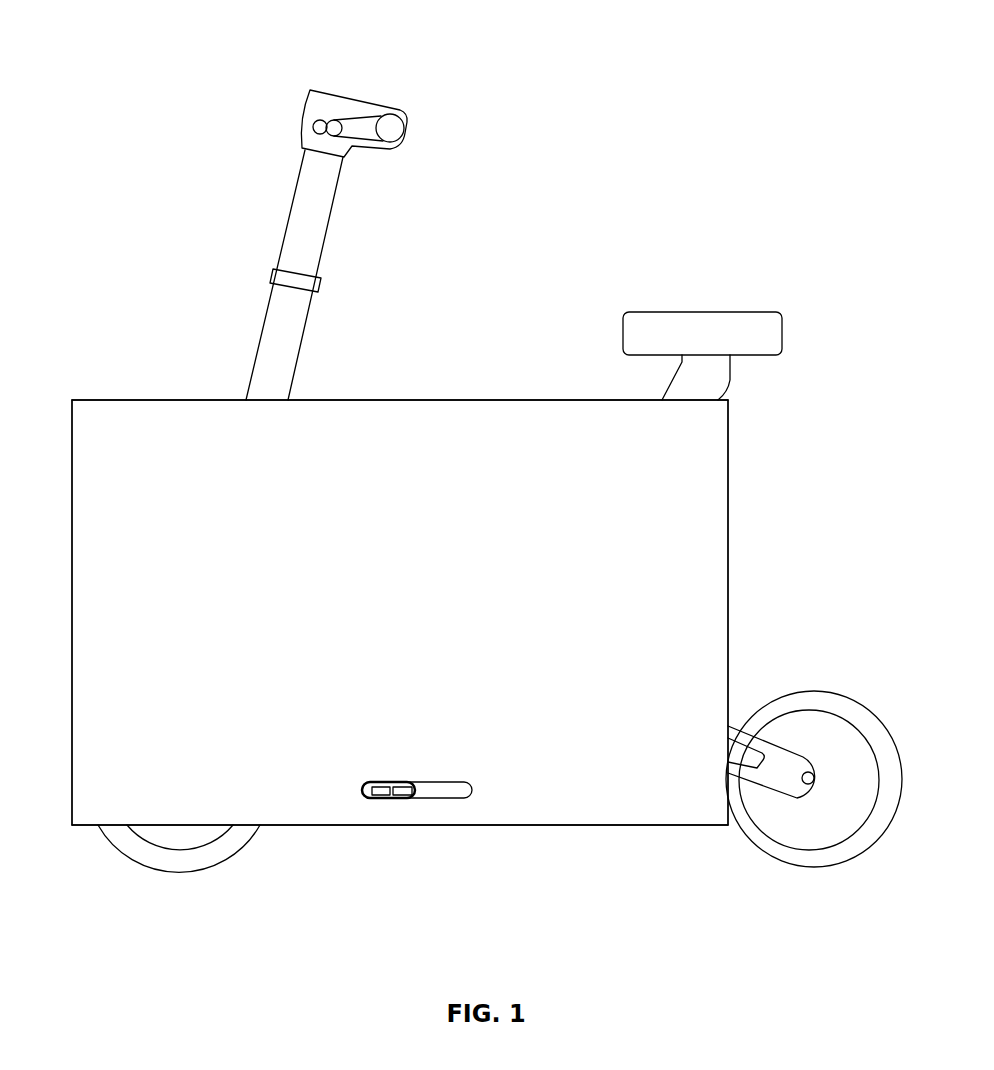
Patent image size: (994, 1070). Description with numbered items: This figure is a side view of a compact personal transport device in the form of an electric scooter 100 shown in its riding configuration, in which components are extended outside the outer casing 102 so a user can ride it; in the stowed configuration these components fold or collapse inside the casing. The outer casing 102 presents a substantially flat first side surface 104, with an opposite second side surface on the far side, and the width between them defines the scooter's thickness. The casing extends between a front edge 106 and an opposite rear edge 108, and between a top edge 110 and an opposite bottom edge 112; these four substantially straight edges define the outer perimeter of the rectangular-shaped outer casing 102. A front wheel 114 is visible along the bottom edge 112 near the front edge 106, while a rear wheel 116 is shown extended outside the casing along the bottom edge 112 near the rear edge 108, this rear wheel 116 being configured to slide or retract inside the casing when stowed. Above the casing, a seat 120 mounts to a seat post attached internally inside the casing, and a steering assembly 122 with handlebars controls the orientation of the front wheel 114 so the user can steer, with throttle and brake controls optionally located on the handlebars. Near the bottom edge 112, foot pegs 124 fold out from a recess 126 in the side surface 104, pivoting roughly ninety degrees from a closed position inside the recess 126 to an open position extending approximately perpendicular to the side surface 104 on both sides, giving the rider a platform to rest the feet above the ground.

The electric scooter 100 is at (587, 208).
The outer casing 102 is at (697, 530).
The first side surface 104 is at (377, 602).
The front edge 106 is at (72, 493).
The rear edge 108 is at (728, 588).
The top edge 110 is at (447, 400).
The bottom edge 112 is at (462, 825).
The front wheel 114 is at (170, 872).
The rear wheel 116 is at (807, 870).
The seat 120 is at (703, 330).
The steering assembly 122 is at (355, 97).
The foot pegs 124 is at (410, 790).
The recess 126 is at (442, 768).